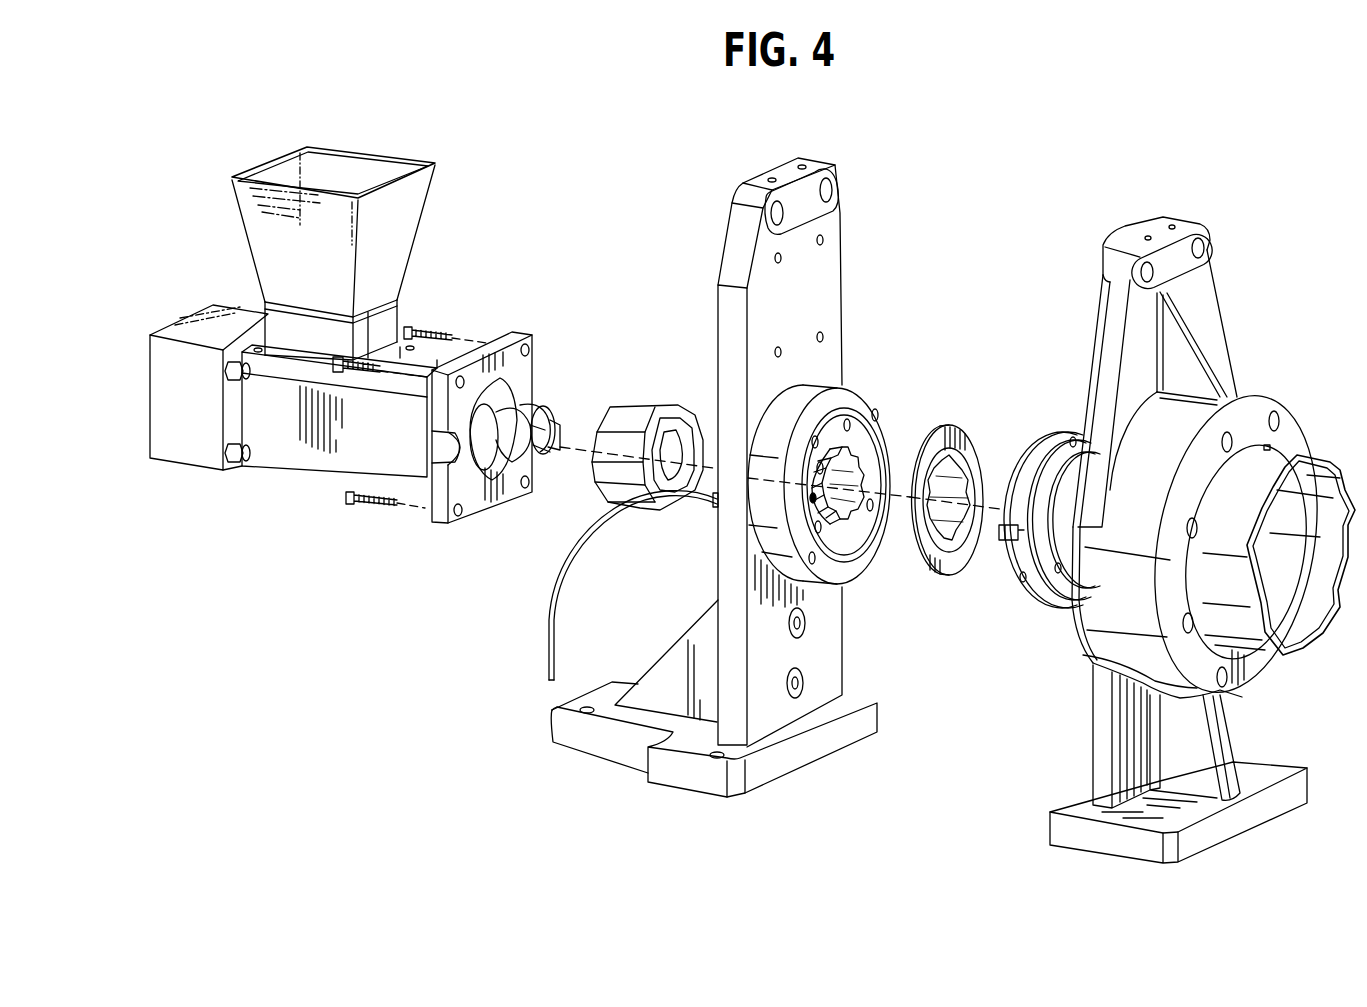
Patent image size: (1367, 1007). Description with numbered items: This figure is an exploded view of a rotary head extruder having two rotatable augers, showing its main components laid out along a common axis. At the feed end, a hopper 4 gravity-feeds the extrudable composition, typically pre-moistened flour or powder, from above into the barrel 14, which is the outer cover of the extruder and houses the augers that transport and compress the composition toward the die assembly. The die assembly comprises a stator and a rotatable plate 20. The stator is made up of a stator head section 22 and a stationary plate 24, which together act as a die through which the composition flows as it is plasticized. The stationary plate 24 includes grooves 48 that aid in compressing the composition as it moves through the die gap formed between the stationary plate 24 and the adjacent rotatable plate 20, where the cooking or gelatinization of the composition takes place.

The hopper 4 is at (373, 177).
The barrel 14 is at (275, 427).
The rotatable plate 20 is at (1022, 452).
The stator head section 22 is at (862, 405).
The stationary plate 24 is at (955, 495).
The grooves 48 is at (948, 545).